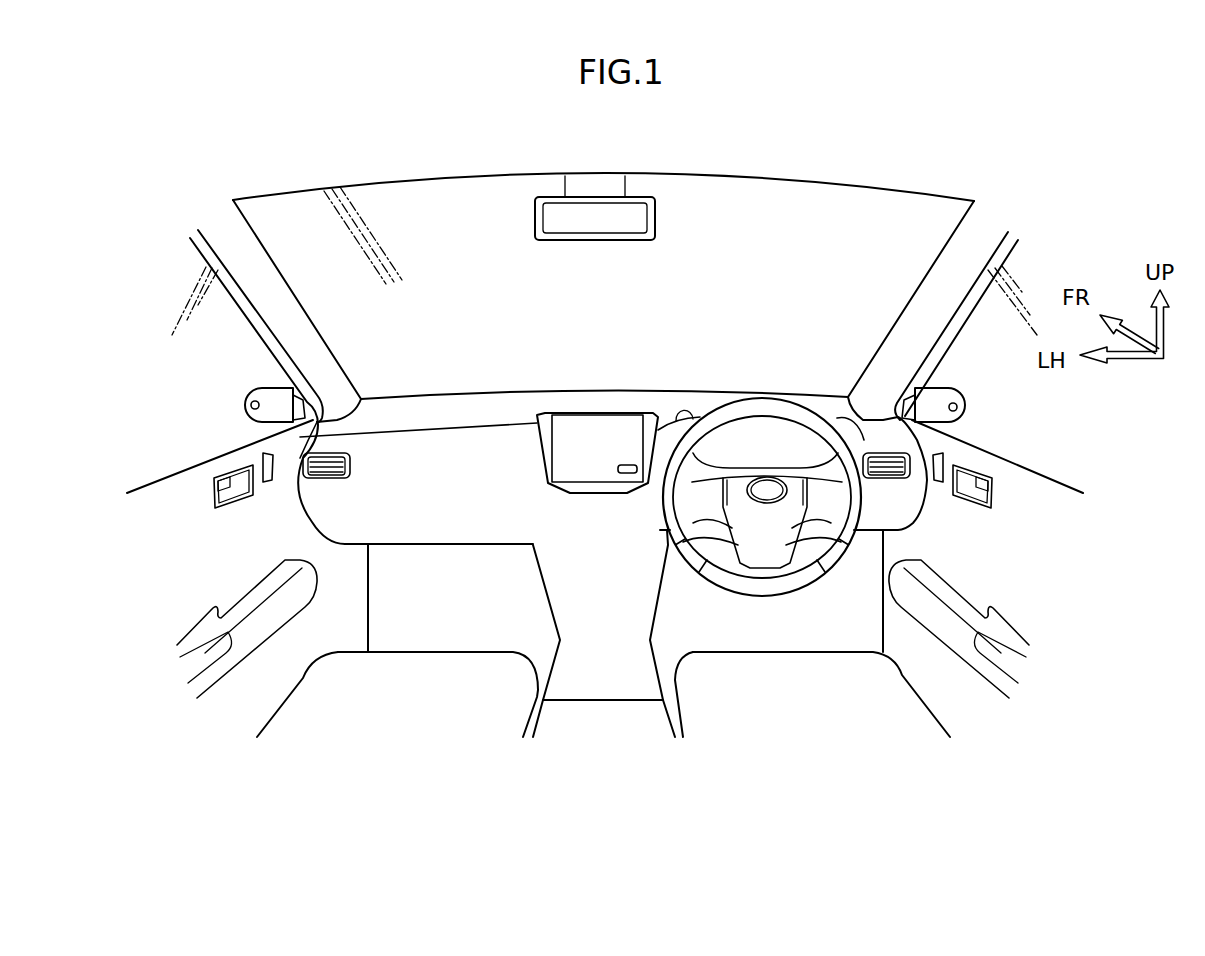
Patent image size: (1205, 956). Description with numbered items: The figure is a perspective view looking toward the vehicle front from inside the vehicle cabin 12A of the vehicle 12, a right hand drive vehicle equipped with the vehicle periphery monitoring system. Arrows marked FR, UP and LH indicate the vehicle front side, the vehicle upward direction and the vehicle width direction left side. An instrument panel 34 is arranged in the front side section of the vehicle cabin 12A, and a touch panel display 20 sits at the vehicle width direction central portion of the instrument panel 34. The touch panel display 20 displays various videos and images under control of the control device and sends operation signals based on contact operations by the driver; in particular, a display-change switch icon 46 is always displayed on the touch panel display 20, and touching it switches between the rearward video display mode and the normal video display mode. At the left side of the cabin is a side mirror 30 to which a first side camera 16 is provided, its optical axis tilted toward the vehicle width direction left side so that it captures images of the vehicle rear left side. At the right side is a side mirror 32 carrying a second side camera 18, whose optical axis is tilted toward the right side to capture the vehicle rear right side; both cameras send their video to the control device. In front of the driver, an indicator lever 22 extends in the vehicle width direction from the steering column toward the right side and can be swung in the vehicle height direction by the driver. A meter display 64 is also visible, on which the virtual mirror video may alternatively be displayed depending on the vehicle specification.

The vehicle 12 is at (603, 286).
The vehicle cabin 12A is at (757, 343).
The first side camera 16 is at (251, 405).
The second side camera 18 is at (956, 409).
The touch panel display 20 is at (601, 405).
The indicator lever 22 is at (820, 472).
The side mirror 30 is at (236, 394).
The side mirror 32 is at (971, 416).
The instrument panel 34 is at (430, 413).
The display-change switch icon 46 is at (627, 463).
The meter display 64 is at (732, 453).